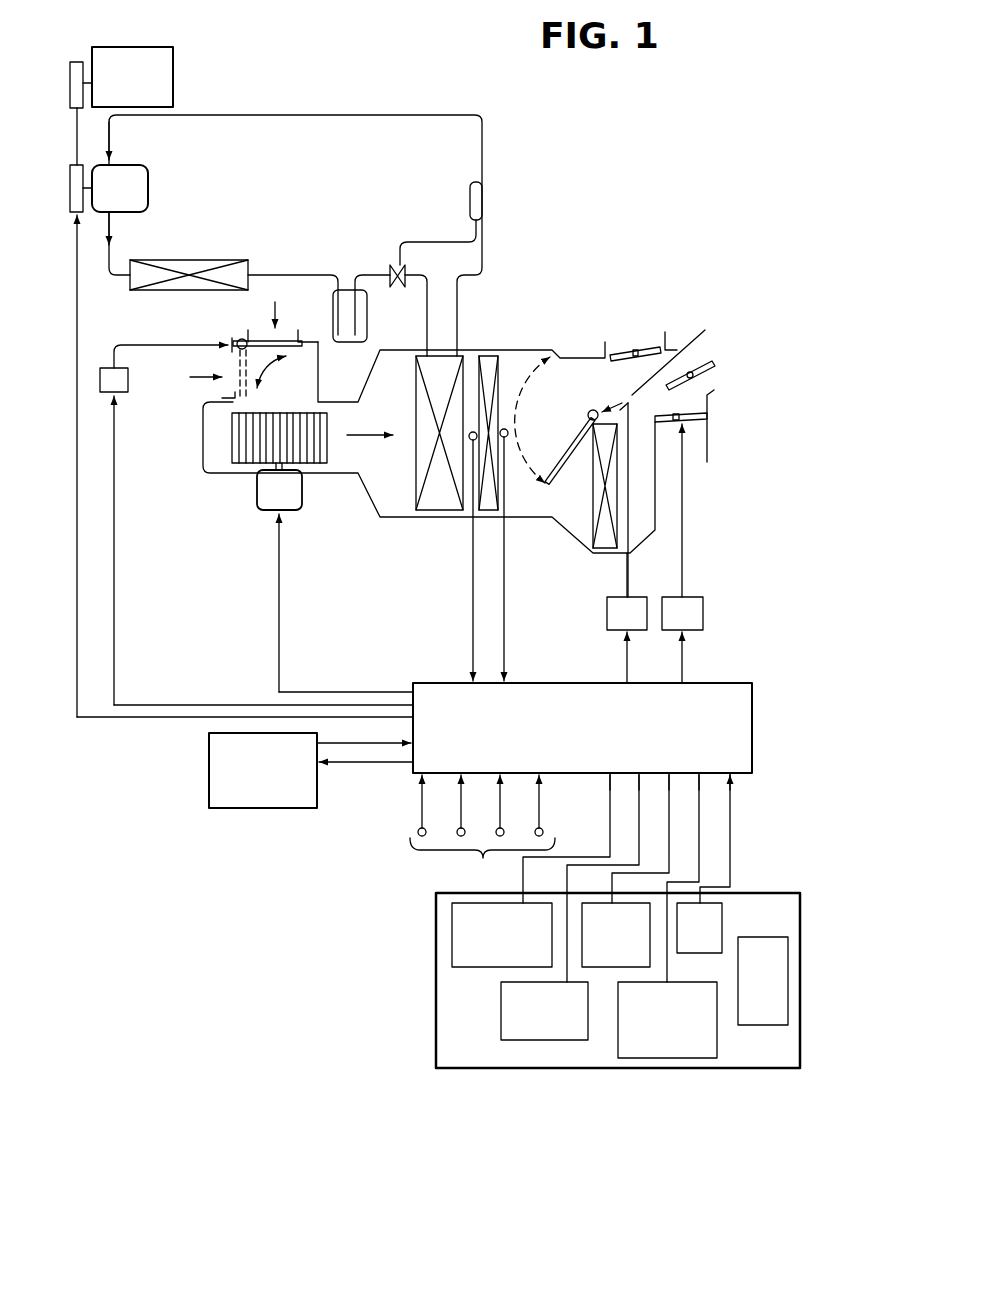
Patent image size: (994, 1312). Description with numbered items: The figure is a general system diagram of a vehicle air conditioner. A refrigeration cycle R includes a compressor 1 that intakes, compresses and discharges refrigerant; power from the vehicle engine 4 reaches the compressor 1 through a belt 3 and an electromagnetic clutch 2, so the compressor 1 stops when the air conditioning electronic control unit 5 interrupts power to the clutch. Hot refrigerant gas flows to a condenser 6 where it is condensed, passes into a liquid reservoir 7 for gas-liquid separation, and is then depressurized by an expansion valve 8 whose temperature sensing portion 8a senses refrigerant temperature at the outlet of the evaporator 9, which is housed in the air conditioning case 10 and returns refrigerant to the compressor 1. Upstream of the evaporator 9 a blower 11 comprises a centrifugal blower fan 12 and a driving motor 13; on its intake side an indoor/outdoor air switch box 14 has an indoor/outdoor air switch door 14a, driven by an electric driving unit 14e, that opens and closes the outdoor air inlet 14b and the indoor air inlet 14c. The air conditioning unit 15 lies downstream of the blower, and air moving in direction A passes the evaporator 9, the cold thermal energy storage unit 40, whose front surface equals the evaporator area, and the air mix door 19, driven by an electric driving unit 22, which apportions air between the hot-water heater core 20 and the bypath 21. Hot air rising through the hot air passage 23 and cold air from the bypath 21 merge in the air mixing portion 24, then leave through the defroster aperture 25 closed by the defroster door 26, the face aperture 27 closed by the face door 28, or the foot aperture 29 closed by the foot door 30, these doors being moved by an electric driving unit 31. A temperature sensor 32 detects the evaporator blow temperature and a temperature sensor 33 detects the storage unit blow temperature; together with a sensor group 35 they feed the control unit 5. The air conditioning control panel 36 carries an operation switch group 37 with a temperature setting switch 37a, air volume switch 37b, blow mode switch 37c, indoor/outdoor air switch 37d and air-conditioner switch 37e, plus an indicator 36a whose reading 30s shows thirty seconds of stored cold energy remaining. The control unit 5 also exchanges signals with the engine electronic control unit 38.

The compressor 1 is at (148, 172).
The electromagnetic clutch 2 is at (70, 196).
The belt 3 is at (77, 137).
The vehicle engine 4 is at (173, 82).
The air conditioning electronic control unit 5 is at (714, 682).
The condenser 6 is at (228, 260).
The liquid reservoir 7 is at (367, 312).
The expansion valve 8 is at (397, 265).
The temperature sensing portion 8a is at (470, 200).
The evaporator 9 is at (416, 470).
The air conditioning case 10 is at (464, 352).
The blower 11 is at (196, 441).
The blower fan 12 is at (232, 458).
The driving motor 13 is at (262, 514).
The indoor/outdoor air switch box 14 is at (318, 360).
The indoor/outdoor air switch door 14a is at (239, 339).
The outdoor air inlet 14b is at (265, 338).
The indoor air inlet 14c is at (225, 385).
The electric driving unit 14e is at (108, 368).
The air conditioning unit 15 is at (536, 344).
The air mix door 19 is at (577, 440).
The hot-water heater core 20 is at (595, 548).
The bypath 21 is at (600, 398).
The electric driving unit 22 is at (608, 630).
The hot air passage 23 is at (637, 508).
The air mixing portion 24 is at (705, 330).
The defroster aperture 25 is at (636, 348).
The defroster door 26 is at (661, 345).
The face aperture 27 is at (692, 363).
The face door 28 is at (713, 372).
The foot aperture 29 is at (688, 430).
The foot door 30 is at (697, 422).
The remaining time indication 30s is at (763, 981).
The electric driving unit 31 is at (703, 613).
The temperature sensor 32 is at (473, 441).
The temperature sensor 33 is at (505, 430).
The sensor group 35 is at (499, 833).
The air conditioning control panel 36 is at (433, 968).
The indicator 36a is at (760, 1025).
The operation switch group 37 is at (512, 1052).
The temperature setting switch 37a is at (470, 967).
The air volume switch 37b is at (553, 1040).
The blow mode switch 37c is at (606, 967).
The indoor/outdoor air switch 37d is at (668, 1058).
The air-conditioner switch 37e is at (700, 953).
The engine electronic control unit 38 is at (262, 808).
The cold thermal energy storage unit 40 is at (488, 510).
The refrigeration cycle R is at (328, 112).
The direction of air flow A is at (352, 442).